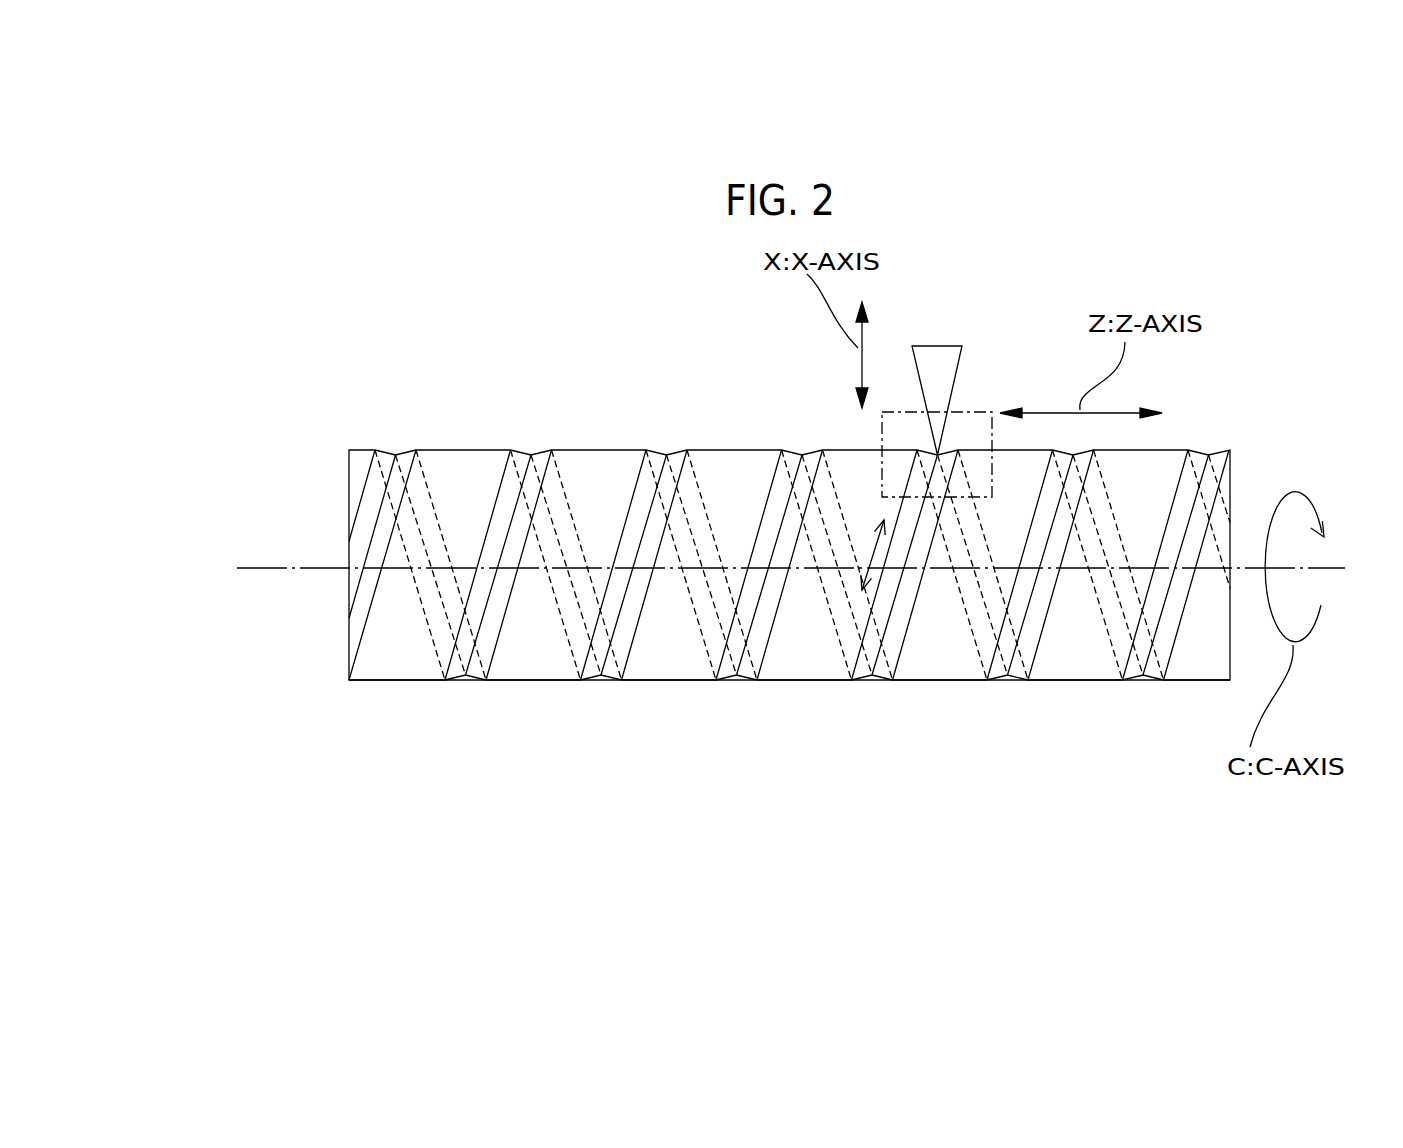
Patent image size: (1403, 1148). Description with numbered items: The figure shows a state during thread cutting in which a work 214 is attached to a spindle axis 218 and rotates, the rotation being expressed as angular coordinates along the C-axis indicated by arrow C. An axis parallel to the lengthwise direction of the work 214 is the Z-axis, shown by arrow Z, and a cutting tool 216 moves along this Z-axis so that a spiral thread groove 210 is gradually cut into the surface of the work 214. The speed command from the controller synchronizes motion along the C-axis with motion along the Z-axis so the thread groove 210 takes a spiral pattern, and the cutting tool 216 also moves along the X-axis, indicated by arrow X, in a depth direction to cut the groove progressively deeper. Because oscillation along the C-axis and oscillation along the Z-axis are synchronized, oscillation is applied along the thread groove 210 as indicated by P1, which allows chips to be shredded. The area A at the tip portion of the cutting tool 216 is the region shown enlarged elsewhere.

The thread groove 210 is at (666, 455).
The work 214 is at (388, 682).
The cutting tool 216 is at (947, 346).
The spindle axis 218 is at (317, 568).
The area at a tip portion of the cutting tool A is at (882, 431).
The oscillation along the thread groove P1 is at (878, 548).